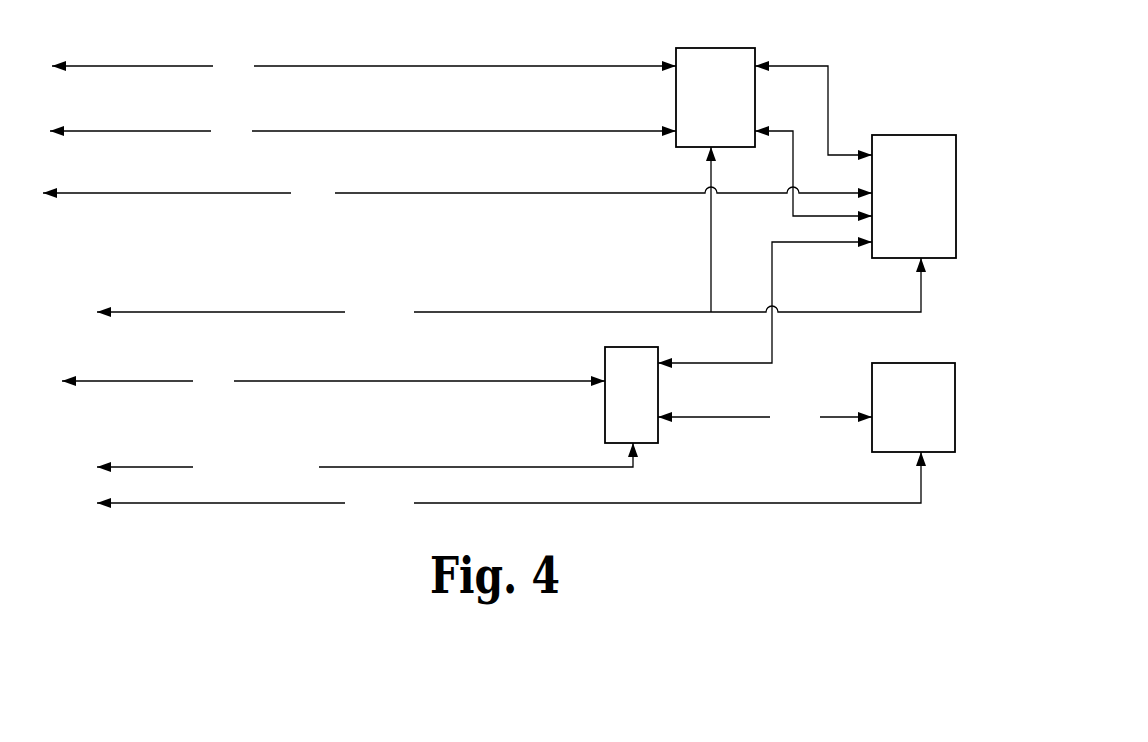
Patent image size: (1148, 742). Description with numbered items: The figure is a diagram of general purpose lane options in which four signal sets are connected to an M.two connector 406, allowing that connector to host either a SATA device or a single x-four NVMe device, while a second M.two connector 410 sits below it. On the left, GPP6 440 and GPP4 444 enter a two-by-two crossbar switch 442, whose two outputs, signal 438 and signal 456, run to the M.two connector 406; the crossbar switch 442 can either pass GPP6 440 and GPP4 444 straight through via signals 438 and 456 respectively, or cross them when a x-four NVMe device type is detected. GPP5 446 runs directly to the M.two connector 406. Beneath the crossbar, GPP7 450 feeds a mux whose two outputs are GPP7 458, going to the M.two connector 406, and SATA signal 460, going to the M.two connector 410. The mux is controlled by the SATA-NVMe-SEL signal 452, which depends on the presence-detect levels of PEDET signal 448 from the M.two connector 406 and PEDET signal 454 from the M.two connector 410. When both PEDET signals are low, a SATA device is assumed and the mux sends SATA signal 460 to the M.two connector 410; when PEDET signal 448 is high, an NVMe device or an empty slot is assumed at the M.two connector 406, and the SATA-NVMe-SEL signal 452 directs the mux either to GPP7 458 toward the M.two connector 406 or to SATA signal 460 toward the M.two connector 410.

The M.2 connector 406 is at (898, 258).
The M.2 connector 410 is at (872, 377).
The signal 438 is at (829, 97).
The GPP6 440 is at (408, 68).
The crossbar switch 442 is at (676, 92).
The GPP4 444 is at (173, 133).
The GPP5 446 is at (408, 195).
The PEDET signal 448 is at (465, 314).
The GPP7 450 is at (337, 383).
The SATA-NVMe-SEL signal 452 is at (450, 466).
The PEDET signal 454 is at (502, 503).
The signal 456 is at (793, 157).
The GPP7 458 is at (755, 363).
The SATA signal 460 is at (733, 418).